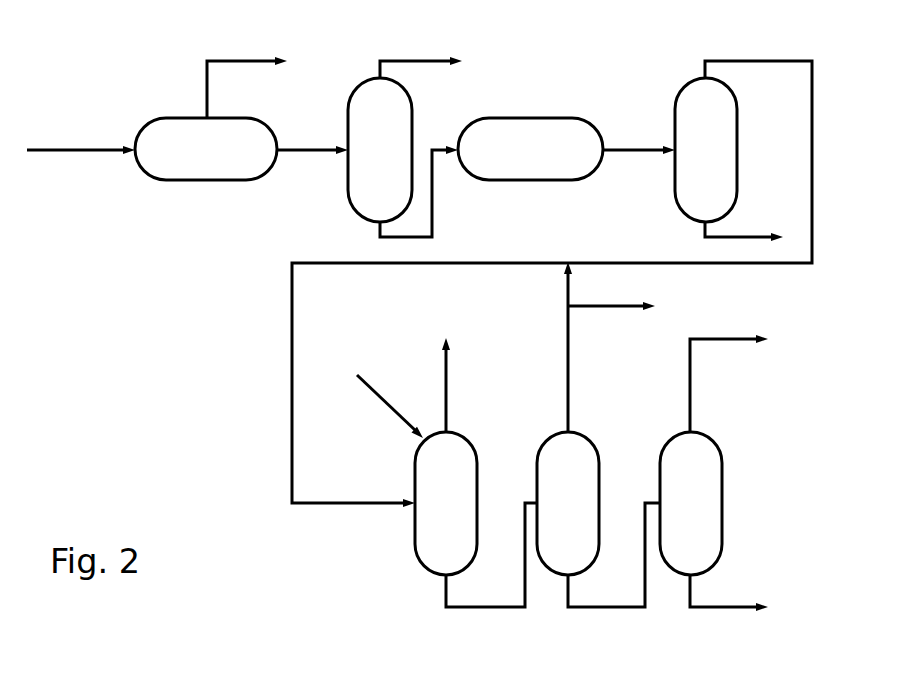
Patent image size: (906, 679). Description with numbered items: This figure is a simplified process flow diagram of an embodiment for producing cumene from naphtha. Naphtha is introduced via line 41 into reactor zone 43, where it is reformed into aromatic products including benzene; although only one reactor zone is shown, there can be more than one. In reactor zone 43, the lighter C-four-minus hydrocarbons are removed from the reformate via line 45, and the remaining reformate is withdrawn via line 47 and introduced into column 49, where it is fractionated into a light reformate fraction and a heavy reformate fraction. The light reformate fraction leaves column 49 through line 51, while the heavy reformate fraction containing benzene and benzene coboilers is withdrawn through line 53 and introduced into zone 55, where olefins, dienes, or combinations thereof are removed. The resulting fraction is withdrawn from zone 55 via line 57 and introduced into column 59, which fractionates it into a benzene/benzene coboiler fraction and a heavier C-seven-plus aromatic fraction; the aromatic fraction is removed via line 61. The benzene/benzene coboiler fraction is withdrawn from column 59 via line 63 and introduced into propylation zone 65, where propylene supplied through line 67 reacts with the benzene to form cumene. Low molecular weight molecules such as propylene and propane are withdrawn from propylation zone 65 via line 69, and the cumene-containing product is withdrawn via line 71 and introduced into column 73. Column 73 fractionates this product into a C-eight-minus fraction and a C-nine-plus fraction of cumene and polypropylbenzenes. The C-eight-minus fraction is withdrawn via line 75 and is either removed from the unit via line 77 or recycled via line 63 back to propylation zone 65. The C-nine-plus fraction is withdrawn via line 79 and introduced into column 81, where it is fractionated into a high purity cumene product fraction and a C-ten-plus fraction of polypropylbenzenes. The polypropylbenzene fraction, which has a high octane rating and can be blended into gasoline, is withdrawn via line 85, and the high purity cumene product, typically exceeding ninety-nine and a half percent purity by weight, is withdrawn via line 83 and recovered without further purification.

The line 41 is at (72, 147).
The reactor zone 43 is at (207, 182).
The line 45 is at (233, 60).
The line 47 is at (300, 147).
The column 49 is at (355, 213).
The line 51 is at (412, 60).
The line 53 is at (435, 147).
The zone 55 is at (528, 118).
The line 57 is at (633, 152).
The column 59 is at (737, 143).
The line 61 is at (733, 235).
The line 63 is at (770, 60).
The propylation zone 65 is at (413, 540).
The line 67 is at (383, 407).
The line 69 is at (447, 400).
The line 71 is at (482, 610).
The column 73 is at (583, 433).
The line 75 is at (570, 373).
The line 77 is at (600, 303).
The line 79 is at (605, 610).
The column 81 is at (722, 480).
The line 83 is at (723, 338).
The line 85 is at (722, 610).